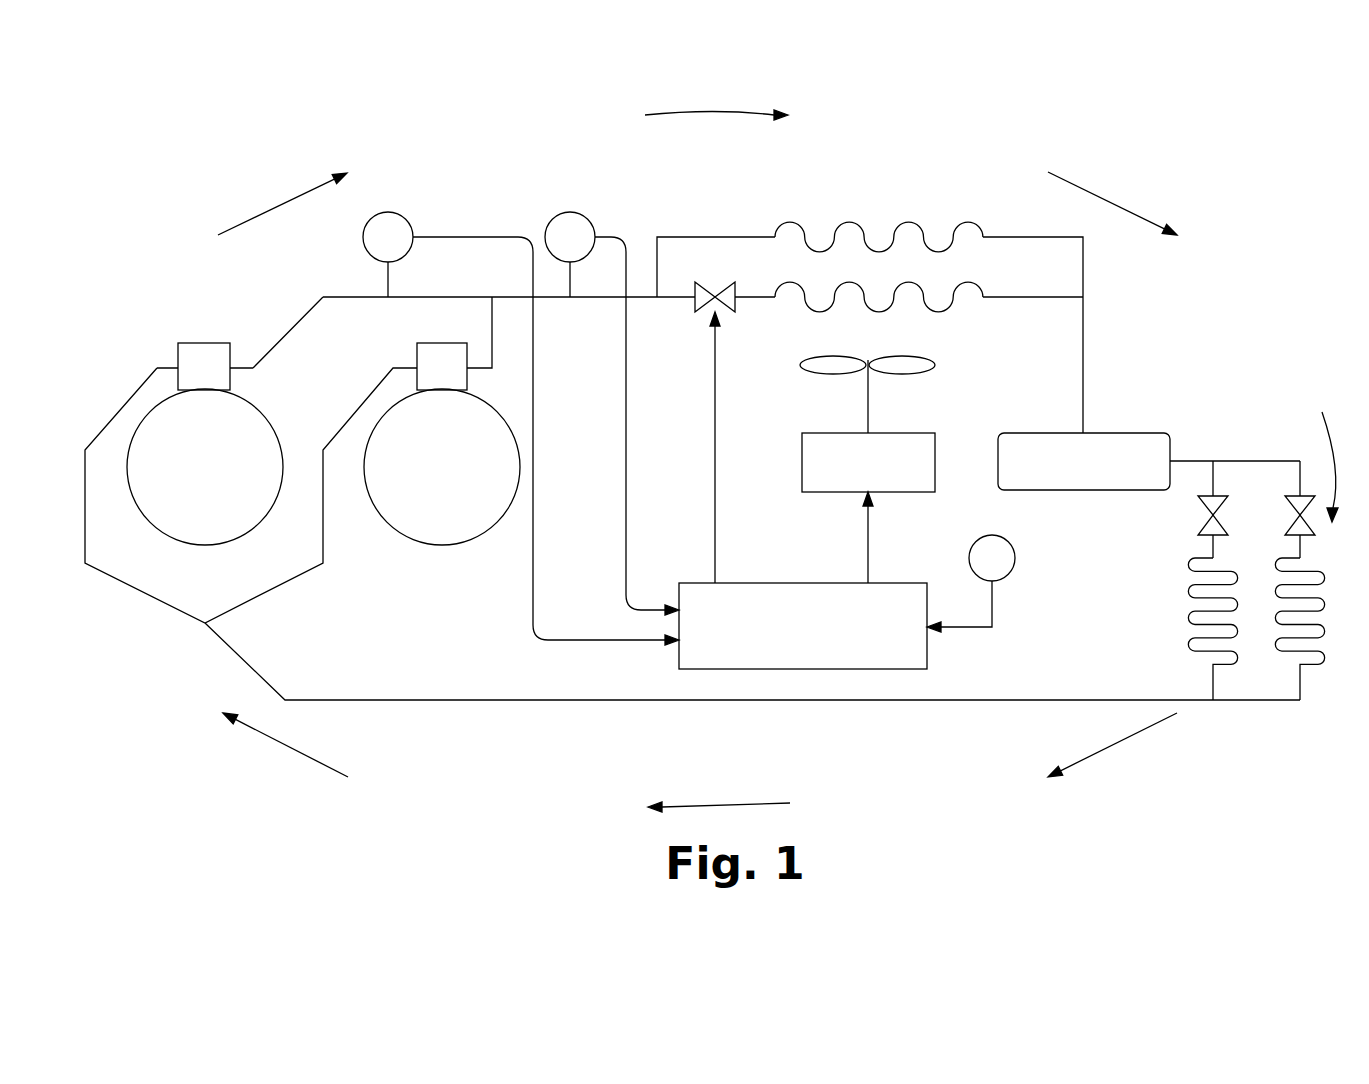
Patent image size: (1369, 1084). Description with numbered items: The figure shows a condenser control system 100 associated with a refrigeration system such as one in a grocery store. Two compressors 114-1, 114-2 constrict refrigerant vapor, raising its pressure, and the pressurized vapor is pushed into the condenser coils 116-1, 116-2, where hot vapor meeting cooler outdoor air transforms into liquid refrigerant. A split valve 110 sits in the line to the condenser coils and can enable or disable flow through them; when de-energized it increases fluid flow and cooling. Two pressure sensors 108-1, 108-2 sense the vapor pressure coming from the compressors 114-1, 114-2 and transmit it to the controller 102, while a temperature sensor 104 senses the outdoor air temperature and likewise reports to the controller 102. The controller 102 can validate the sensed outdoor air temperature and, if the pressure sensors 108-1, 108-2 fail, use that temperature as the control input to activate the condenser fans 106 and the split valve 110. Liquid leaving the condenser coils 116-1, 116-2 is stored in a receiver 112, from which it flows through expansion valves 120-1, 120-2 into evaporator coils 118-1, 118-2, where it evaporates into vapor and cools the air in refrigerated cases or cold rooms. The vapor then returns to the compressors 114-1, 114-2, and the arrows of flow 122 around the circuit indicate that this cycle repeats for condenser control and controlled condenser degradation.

The condenser control system 100 is at (328, 130).
The controller 102 is at (805, 583).
The temperature sensor 104 is at (1015, 558).
The condenser fans 106 is at (925, 433).
The first pressure sensor 108-1 is at (388, 212).
The second pressure sensor 108-2 is at (570, 212).
The split valve 110 is at (719, 290).
The receiver 112 is at (1135, 433).
The first compressor 114-1 is at (152, 528).
The second compressor 114-2 is at (392, 530).
The first condenser coil 116-1 is at (920, 222).
The second condenser coil 116-2 is at (920, 285).
The first evaporator coil 118-1 is at (1195, 645).
The second evaporator coil 118-2 is at (1275, 645).
The first expansion valve 120-1 is at (1200, 512).
The second expansion valve 120-2 is at (1290, 510).
The flow 122 is at (253, 215).